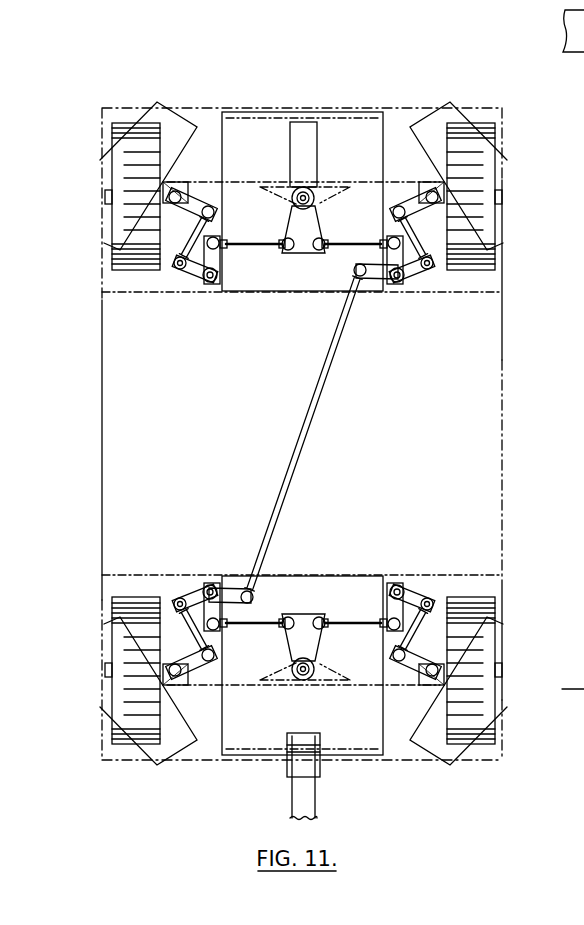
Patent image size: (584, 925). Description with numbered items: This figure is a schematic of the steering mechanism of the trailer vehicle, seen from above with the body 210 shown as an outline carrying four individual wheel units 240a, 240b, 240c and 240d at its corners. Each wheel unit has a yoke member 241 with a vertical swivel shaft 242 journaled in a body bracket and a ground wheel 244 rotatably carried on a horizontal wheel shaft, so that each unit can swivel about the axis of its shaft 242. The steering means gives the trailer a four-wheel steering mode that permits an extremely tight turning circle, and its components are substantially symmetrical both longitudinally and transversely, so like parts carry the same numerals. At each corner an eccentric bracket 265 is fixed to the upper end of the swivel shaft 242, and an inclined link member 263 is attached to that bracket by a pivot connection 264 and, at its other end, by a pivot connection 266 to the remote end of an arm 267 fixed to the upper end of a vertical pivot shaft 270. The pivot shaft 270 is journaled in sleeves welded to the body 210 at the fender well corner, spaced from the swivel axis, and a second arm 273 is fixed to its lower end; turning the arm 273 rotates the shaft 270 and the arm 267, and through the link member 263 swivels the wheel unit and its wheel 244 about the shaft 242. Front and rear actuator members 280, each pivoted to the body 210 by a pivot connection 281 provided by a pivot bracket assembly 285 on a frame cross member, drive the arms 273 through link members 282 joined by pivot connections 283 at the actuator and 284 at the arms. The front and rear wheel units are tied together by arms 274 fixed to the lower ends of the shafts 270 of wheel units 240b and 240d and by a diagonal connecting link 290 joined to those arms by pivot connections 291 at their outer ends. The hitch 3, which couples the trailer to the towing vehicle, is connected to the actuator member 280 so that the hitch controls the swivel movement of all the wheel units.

The hitch 3 is at (583, 80).
The body 210 is at (98, 433).
The wheel unit 240a is at (455, 672).
The wheel unit 240b is at (167, 690).
The wheel unit 240c is at (167, 177).
The wheel unit 240d is at (455, 210).
The yoke member 241 is at (183, 180).
The vertical swivel shaft 242 is at (195, 198).
The ground wheel 244 is at (114, 140).
The link member 263 is at (165, 204).
The pivot connection 264 is at (200, 203).
The eccentric bracket 265 is at (196, 238).
The pivot connection 266 is at (198, 270).
The arm 267 is at (177, 264).
The vertical pivot shaft 270 is at (185, 268).
The arm 273 is at (214, 284).
The arm 274 is at (381, 278).
The actuator member 280 is at (310, 152).
The pivot connection 281 is at (302, 187).
The link member 282 is at (258, 248).
The pivot connection 283 is at (285, 241).
The pivot connection 284 is at (222, 236).
The pivot bracket assembly 285 is at (328, 140).
The connecting link 290 is at (300, 456).
The pivot connection 291 is at (360, 280).